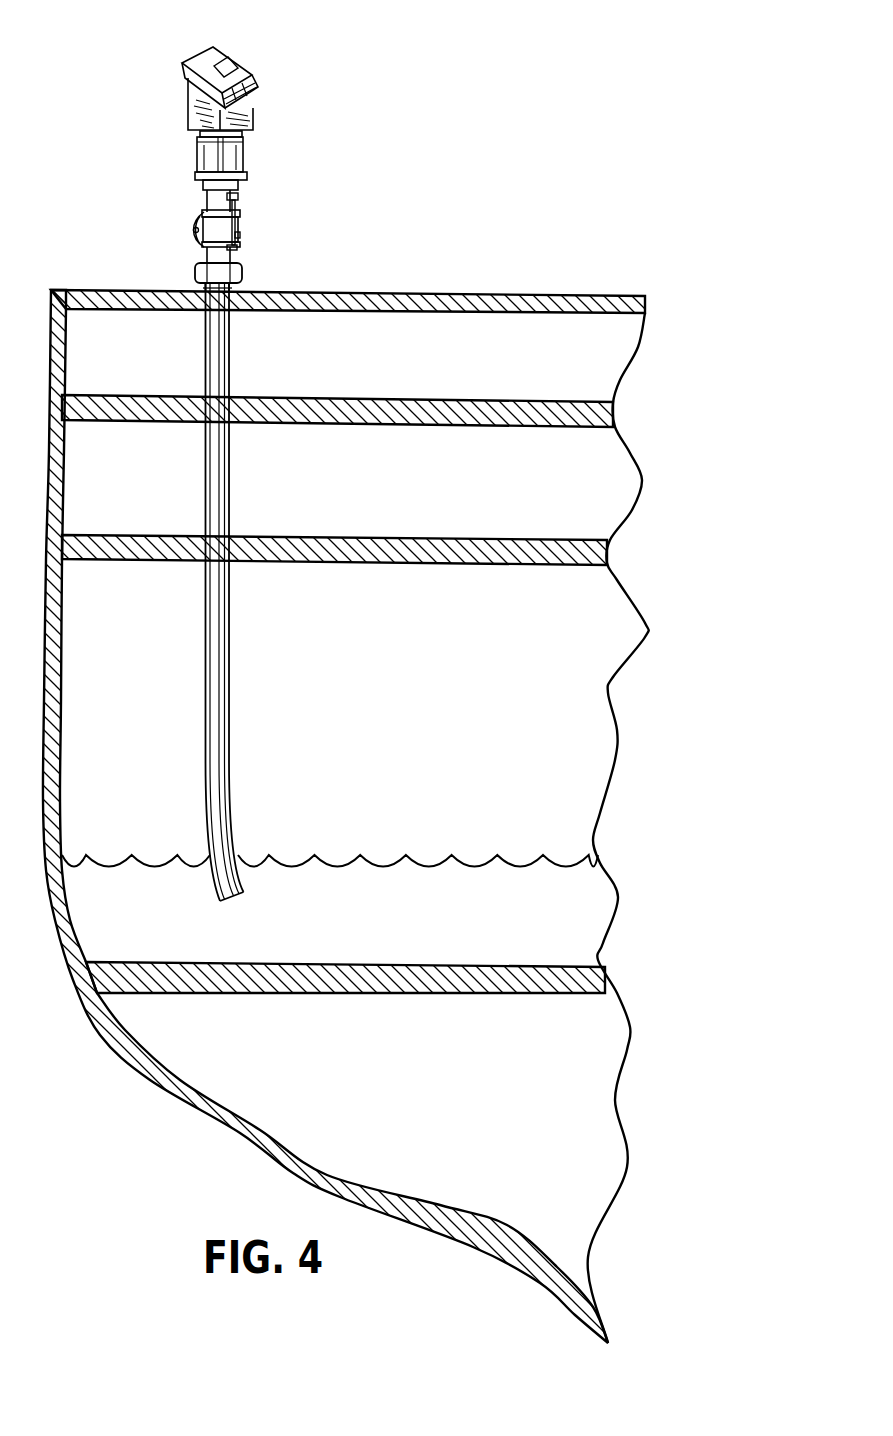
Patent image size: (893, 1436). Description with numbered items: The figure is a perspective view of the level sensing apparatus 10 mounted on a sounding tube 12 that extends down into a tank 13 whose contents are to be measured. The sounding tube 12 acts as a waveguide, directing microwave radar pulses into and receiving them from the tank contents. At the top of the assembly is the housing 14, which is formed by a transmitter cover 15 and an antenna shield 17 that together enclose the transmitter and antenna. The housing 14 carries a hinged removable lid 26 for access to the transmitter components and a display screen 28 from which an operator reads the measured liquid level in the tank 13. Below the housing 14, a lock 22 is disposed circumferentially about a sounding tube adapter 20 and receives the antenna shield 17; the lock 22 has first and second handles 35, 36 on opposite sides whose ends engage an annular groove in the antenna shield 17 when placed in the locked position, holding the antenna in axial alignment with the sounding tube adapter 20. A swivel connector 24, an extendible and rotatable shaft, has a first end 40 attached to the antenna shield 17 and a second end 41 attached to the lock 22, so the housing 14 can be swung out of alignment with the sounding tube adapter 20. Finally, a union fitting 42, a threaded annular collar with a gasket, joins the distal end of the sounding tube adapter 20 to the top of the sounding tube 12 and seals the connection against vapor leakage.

The level sensing apparatus 10 is at (262, 53).
The sounding tube 12 is at (212, 352).
The tank 13 is at (400, 692).
The housing 14 is at (105, 53).
The transmitter cover 15 is at (203, 157).
The antenna shield 17 is at (207, 195).
The sounding tube adapter 20 is at (217, 258).
The lock 22 is at (215, 227).
The swivel connector 24 is at (238, 205).
The hinged removable lid 26 is at (253, 80).
The display screen 28 is at (225, 62).
The first handle 35 is at (205, 248).
The second handle 36 is at (237, 250).
The first end 40 is at (237, 198).
The second end 41 is at (240, 247).
The union fitting 42 is at (243, 290).